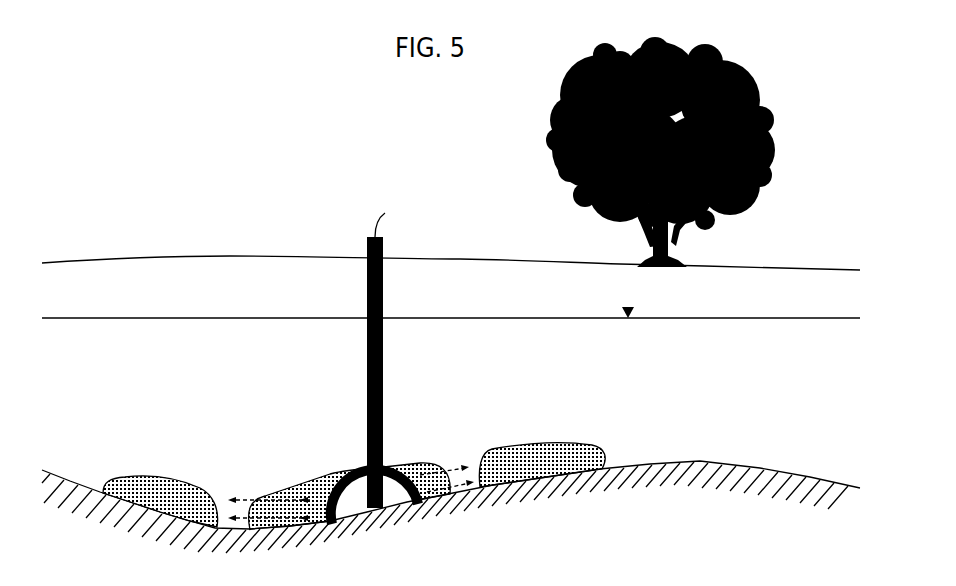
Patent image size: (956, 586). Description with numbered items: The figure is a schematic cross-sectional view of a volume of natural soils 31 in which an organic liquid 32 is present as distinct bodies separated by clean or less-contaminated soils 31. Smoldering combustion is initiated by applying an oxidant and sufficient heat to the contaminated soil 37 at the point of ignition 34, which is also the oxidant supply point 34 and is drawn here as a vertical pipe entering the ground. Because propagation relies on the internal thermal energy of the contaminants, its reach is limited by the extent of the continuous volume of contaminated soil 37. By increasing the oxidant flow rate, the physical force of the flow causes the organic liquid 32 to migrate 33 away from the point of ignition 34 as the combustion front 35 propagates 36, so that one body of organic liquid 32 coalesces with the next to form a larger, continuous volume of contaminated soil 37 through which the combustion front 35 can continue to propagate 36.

The natural soils 31 is at (640, 368).
The organic liquid 32 is at (558, 473).
The migration of organic liquid 33 is at (462, 466).
The point of ignition and oxidant supply point 34 is at (375, 508).
The combustion front 35 is at (337, 498).
The propagation of combustion front 36 is at (313, 492).
The contaminated soil 37 is at (165, 511).